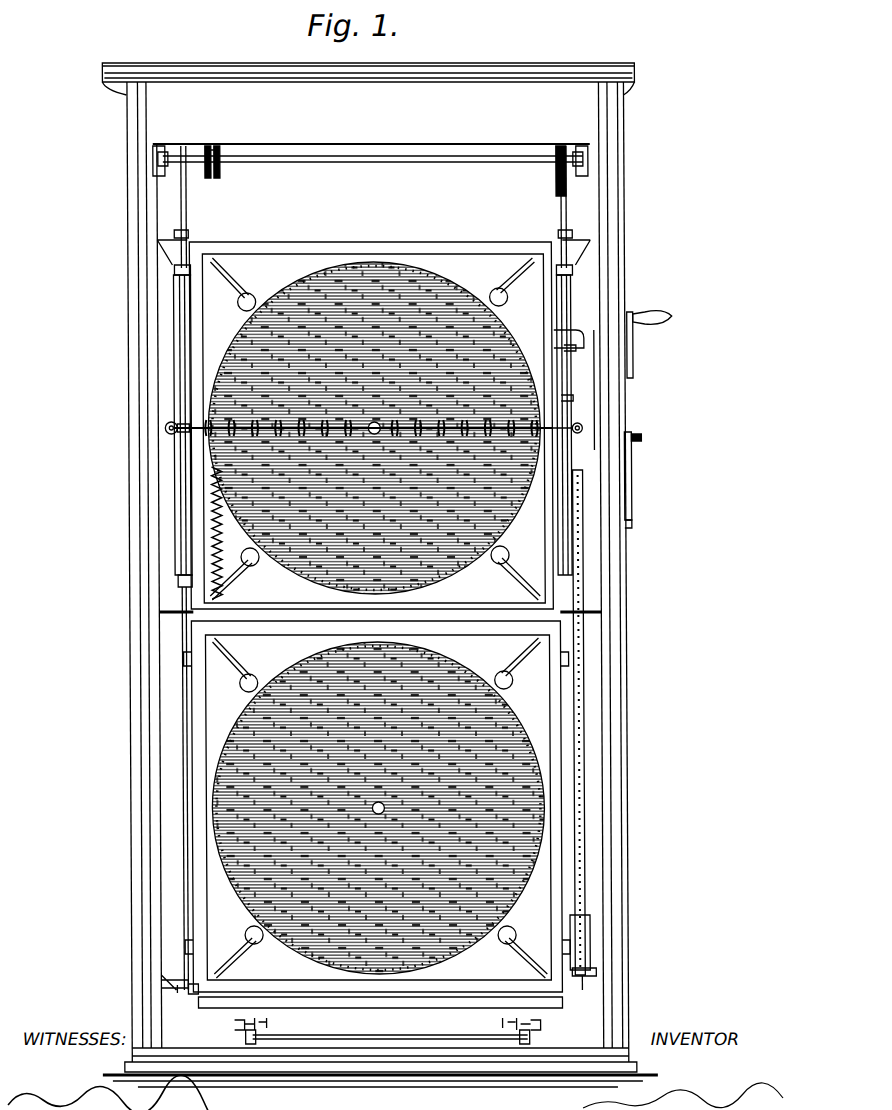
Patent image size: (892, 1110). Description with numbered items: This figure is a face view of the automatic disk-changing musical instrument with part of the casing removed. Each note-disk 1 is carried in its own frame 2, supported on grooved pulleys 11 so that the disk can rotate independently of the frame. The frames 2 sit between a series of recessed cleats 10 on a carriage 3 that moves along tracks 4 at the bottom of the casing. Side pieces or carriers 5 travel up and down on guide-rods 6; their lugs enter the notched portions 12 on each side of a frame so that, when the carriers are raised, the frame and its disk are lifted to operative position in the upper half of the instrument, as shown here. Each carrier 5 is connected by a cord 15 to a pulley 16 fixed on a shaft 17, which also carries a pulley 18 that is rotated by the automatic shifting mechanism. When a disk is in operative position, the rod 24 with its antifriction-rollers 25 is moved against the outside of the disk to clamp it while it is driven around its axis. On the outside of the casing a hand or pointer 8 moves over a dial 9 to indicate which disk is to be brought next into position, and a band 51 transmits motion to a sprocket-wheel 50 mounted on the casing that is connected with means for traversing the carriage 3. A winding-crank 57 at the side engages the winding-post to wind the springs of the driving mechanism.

The note-disk 1 is at (540, 393).
The frame 2 is at (448, 244).
The carriage 3 is at (416, 1009).
The tracks 4 is at (268, 1030).
The side pieces or carriers 5 is at (174, 445).
The guide-rods 6 is at (176, 600).
The hand or pointer 8 is at (634, 468).
The dial 9 is at (632, 526).
The recessed cleats 10 is at (196, 994).
The grooved pulleys 11 is at (377, 618).
The notched portions 12 is at (186, 662).
The cord 15 is at (374, 207).
The pulley 16 is at (562, 184).
The shaft 17 is at (398, 163).
The pulley 18 is at (222, 176).
The rod 24 is at (174, 436).
The antifriction-rollers 25 is at (355, 420).
The sprocket-wheel 50 is at (590, 947).
The band 51 is at (586, 828).
The winding-crank 57 is at (674, 318).